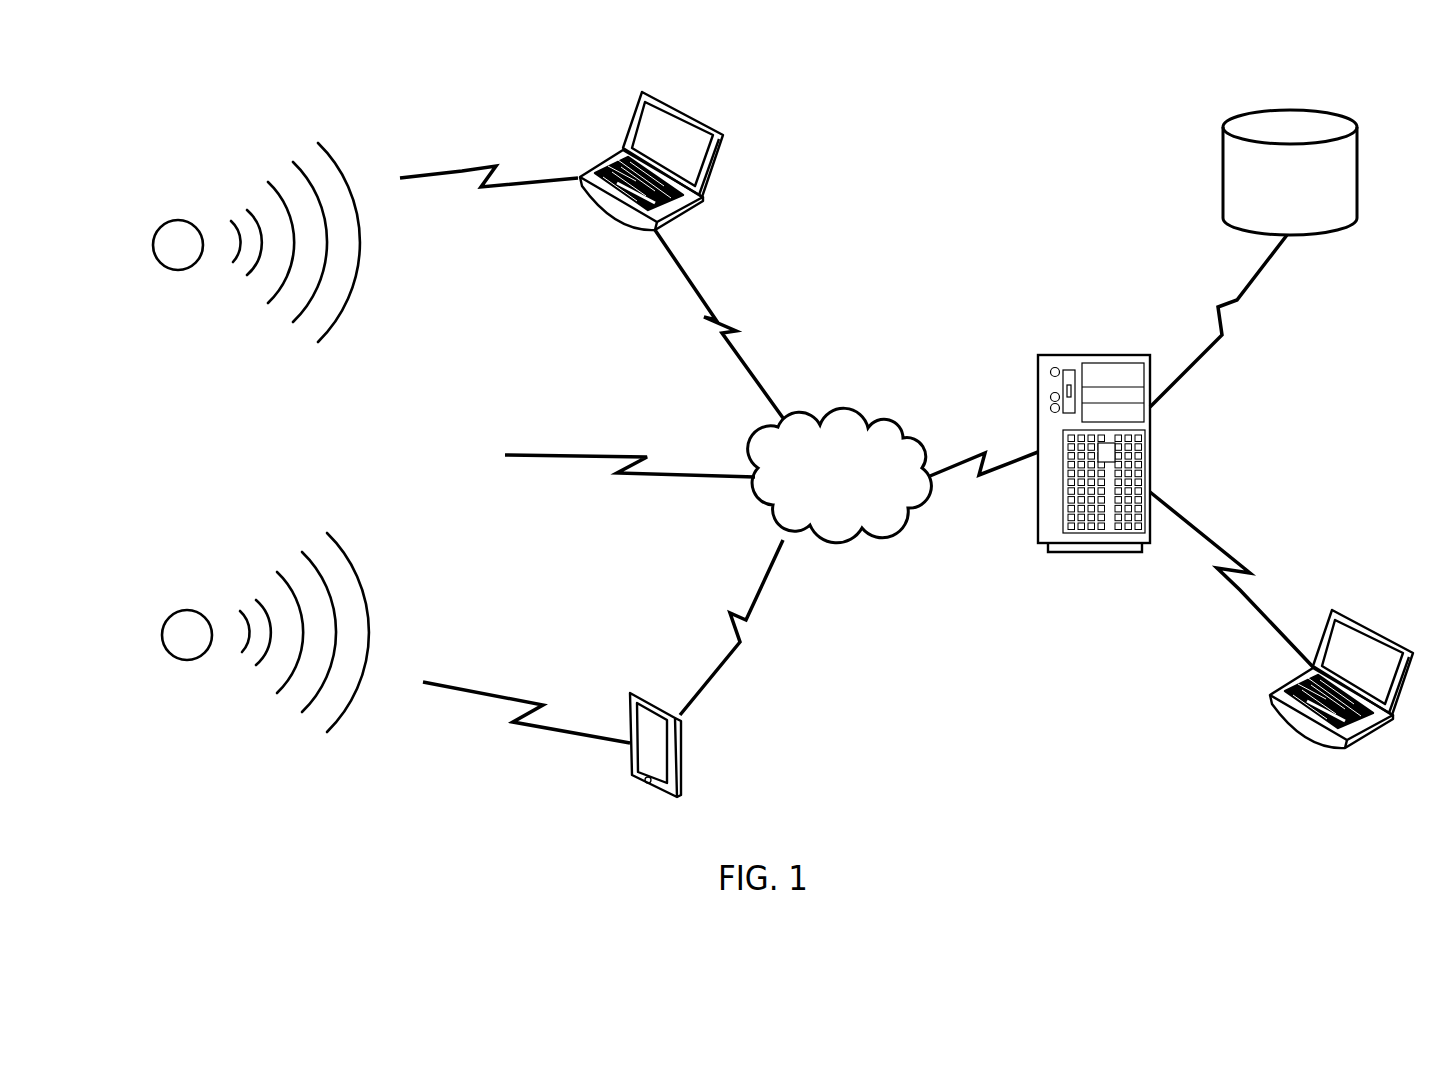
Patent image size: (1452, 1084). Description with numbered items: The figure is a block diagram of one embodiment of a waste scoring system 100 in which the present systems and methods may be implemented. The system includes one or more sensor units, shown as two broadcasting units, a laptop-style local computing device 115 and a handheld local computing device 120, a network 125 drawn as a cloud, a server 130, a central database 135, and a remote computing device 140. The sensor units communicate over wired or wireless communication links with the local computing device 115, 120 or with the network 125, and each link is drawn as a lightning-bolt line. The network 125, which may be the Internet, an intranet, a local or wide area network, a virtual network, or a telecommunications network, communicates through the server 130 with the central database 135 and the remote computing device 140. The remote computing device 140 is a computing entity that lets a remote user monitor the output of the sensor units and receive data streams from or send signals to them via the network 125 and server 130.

The waste scoring system 100 is at (192, 850).
The local computing device 115 is at (622, 213).
The local computing device 120 is at (640, 788).
The network 125 is at (868, 420).
The server 130 is at (1117, 355).
The central database 135 is at (1357, 178).
The remote computing device 140 is at (1303, 735).